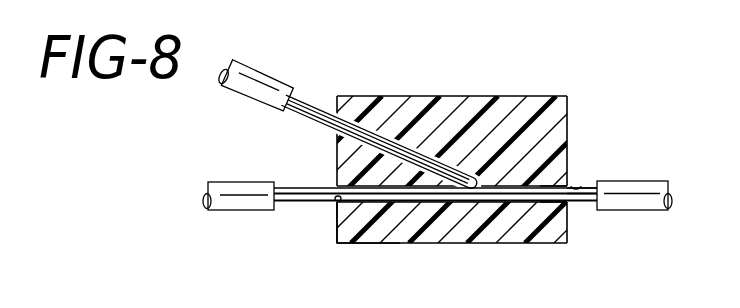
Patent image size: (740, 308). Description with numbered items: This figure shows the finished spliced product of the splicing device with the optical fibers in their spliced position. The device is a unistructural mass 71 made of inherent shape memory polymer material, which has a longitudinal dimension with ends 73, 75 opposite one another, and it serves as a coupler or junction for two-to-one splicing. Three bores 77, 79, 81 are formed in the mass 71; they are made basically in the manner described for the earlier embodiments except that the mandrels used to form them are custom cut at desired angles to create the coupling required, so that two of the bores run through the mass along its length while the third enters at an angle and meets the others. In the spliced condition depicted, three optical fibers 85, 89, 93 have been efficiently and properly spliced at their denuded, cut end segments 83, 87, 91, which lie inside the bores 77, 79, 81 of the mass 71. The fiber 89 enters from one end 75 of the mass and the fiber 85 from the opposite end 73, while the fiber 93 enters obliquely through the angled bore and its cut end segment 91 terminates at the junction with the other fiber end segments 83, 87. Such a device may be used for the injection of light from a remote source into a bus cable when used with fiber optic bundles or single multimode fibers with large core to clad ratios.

The unistructural mass 71 is at (467, 97).
The end 73 is at (570, 106).
The end 75 is at (335, 220).
The bore 77 is at (577, 187).
The bore 79 is at (335, 201).
The bore 81 is at (336, 121).
The denuded, cut end segment 83 is at (583, 201).
The optical fiber 85 is at (638, 199).
The denuded, cut end segment 87 is at (320, 196).
The optical fiber 89 is at (222, 197).
The denuded, cut end segment 91 is at (300, 112).
The optical fiber 93 is at (264, 80).